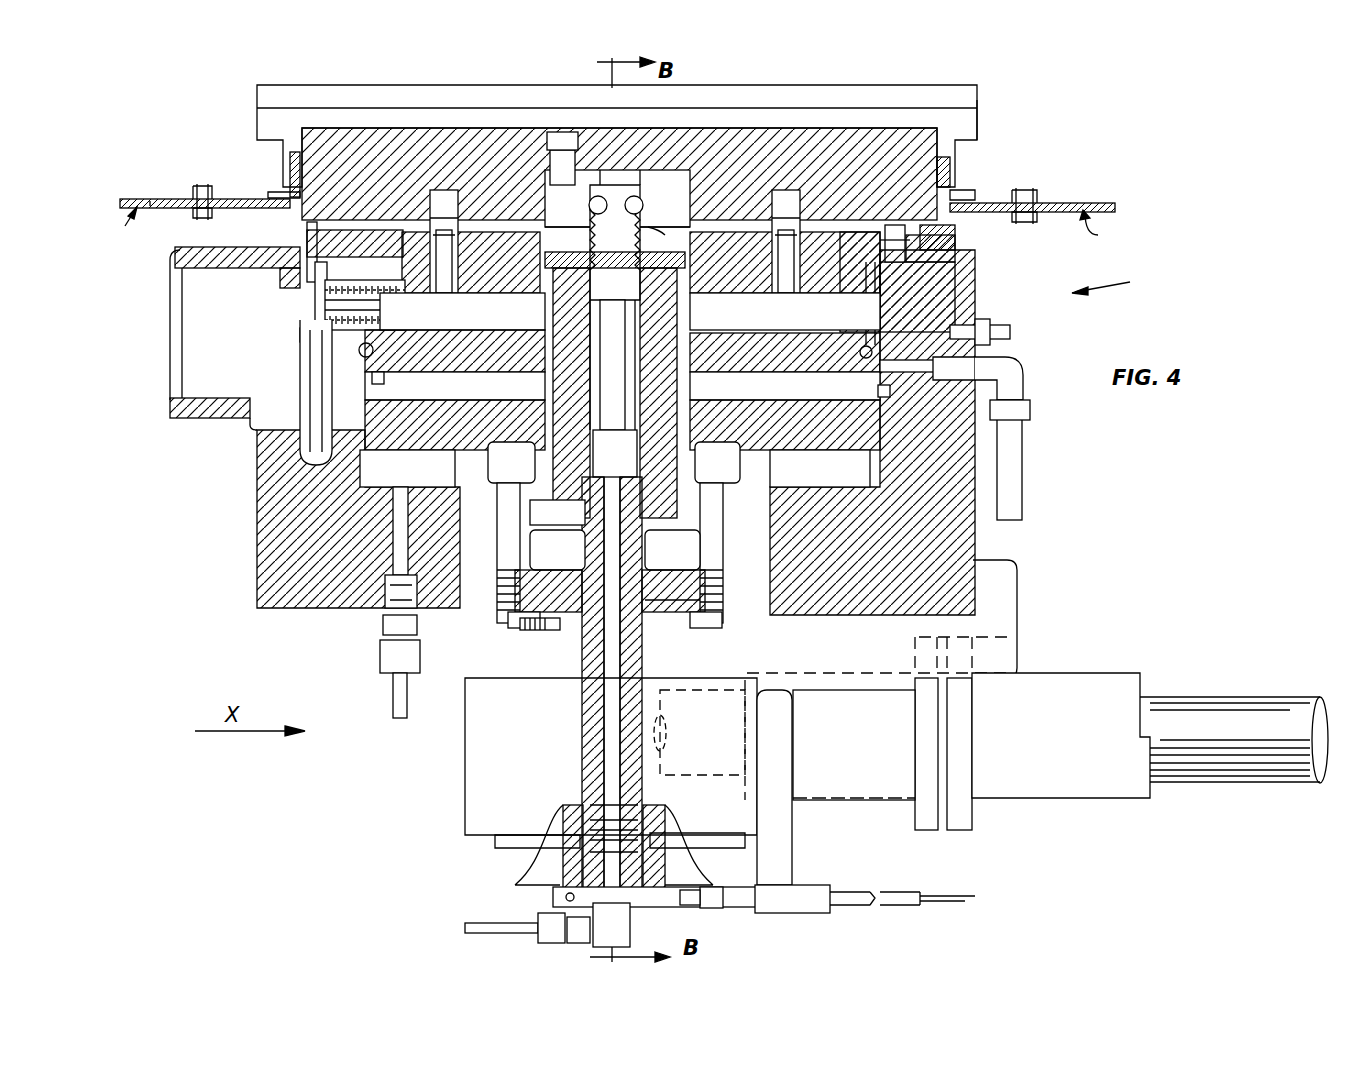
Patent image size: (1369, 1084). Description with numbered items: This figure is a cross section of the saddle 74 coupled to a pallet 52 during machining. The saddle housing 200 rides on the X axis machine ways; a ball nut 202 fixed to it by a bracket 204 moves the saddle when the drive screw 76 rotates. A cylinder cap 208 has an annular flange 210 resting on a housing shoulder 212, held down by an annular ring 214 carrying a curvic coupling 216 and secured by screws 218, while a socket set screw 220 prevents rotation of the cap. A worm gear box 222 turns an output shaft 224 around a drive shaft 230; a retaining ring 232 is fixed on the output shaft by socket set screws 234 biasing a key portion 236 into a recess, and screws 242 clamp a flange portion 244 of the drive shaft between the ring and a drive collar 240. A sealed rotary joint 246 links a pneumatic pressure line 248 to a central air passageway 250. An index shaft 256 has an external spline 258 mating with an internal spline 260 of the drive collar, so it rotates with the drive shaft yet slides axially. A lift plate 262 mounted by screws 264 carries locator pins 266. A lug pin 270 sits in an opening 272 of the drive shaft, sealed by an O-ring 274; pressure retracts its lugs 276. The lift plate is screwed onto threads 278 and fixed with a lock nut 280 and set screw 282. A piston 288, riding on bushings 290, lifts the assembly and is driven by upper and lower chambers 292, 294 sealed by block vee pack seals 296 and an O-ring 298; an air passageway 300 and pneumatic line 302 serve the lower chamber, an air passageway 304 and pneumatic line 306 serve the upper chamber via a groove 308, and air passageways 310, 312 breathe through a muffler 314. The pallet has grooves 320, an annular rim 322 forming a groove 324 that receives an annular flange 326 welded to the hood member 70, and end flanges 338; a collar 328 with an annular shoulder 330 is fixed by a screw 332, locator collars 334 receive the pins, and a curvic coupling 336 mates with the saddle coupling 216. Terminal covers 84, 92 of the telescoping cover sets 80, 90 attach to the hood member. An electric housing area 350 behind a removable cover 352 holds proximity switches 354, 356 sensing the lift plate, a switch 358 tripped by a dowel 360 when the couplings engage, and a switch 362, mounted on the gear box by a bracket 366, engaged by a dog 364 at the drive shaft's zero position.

The pallet 52 is at (745, 160).
The hood member 70 is at (250, 207).
The saddle 74 is at (1112, 281).
The drive screw 76 is at (1235, 783).
The first set of telescoping covers 80 is at (121, 232).
The terminal cover 84 is at (150, 200).
The second set of telescoping covers 90 is at (1105, 229).
The terminal cover 92 is at (1085, 203).
The housing 200 is at (257, 578).
The ball nut 202 is at (1078, 716).
The bracket 204 is at (888, 645).
The cylinder cap 208 is at (398, 228).
The annular flange 210 is at (859, 282).
The shoulder 212 is at (917, 296).
The annular ring 214 is at (973, 258).
The curvic coupling 216 is at (955, 240).
The screws 218 is at (893, 226).
The socket set screw 220 is at (312, 312).
The worm gear box 222 is at (535, 769).
The output shaft 224 is at (552, 640).
The drive shaft 230 is at (680, 596).
The retaining ring 232 is at (700, 648).
The socket set screws 234 is at (535, 628).
The key portion 236 is at (660, 712).
The drive collar 240 is at (497, 580).
The screws 242 is at (801, 584).
The flange portion 244 is at (520, 624).
The sealed rotary joint 246 is at (640, 905).
The pneumatic pressure line 248 is at (500, 923).
The central air passageway 250 is at (582, 720).
The index shaft 256 is at (641, 426).
The external spline 258 is at (557, 514).
The internal spline 260 is at (615, 551).
The lift plate 262 is at (616, 261).
The screws 264 is at (622, 276).
The locator pins 266 is at (818, 193).
The lug pin 270 is at (635, 298).
The opening 272 is at (633, 466).
The O-ring 274 is at (617, 365).
The retractable lugs 276 is at (625, 190).
The threads 278 is at (615, 258).
The lock nut 280 is at (668, 238).
The set screw 282 is at (616, 242).
The piston 288 is at (622, 425).
The bushings 290 is at (630, 361).
The upper chamber 292 is at (748, 414).
The lower chamber 294 is at (425, 474).
The block vee pack seals 296 is at (788, 514).
The O-ring 298 is at (373, 350).
The air passageway 300 is at (393, 527).
The pneumatic line 302 is at (393, 696).
The air passageway 304 is at (935, 360).
The pneumatic line 306 is at (1022, 465).
The groove 308 is at (365, 372).
The air passageway 310 is at (878, 335).
The air passageway 312 is at (918, 338).
The muffler 314 is at (1012, 330).
The grooves 320 is at (410, 104).
The annular rim 322 is at (290, 165).
The groove 324 is at (305, 158).
The annular flange 326 is at (272, 192).
The collar 328 is at (690, 205).
The annular shoulder 330 is at (680, 225).
The screw 332 is at (580, 150).
The locator collars 334 is at (460, 200).
The curvic coupling 336 is at (945, 222).
The end flanges 338 is at (977, 135).
The electric housing area 350 is at (250, 371).
The removable cover 352 is at (175, 352).
The proximity switch 354 is at (395, 308).
The proximity switch 356 is at (300, 340).
The switch 358 is at (302, 370).
The dowel 360 is at (312, 222).
The switch 362 is at (768, 916).
The dog 364 is at (700, 910).
The bracket 366 is at (775, 832).